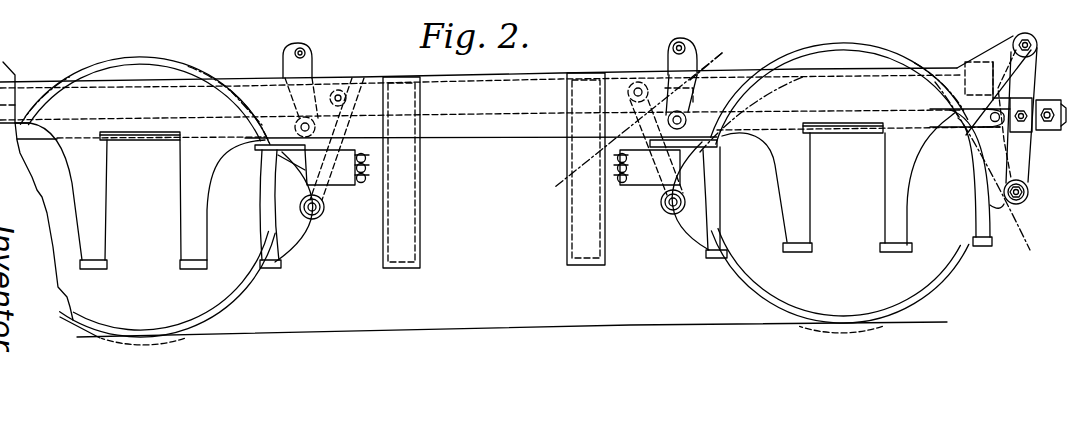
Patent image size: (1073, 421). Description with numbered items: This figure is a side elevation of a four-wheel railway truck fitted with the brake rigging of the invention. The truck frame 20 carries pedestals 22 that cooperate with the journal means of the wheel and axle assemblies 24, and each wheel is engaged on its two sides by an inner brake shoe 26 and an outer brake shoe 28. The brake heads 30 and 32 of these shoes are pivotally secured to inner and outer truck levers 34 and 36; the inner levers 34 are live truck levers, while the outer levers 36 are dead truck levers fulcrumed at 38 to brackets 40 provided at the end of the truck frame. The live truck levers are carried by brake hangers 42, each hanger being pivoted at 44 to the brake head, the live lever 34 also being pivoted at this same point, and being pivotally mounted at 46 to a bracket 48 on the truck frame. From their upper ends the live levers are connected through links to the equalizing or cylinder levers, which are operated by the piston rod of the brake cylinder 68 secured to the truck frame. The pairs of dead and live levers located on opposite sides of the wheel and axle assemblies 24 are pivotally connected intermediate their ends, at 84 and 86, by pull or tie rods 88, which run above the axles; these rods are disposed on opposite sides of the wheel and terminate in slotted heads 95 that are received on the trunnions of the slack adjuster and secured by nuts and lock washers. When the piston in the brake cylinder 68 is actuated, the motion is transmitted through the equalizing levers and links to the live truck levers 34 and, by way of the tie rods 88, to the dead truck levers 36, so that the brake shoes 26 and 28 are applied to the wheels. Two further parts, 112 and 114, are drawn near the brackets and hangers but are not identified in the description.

The truck frame 20 is at (477, 78).
The pedestals 22 is at (105, 217).
The wheel and axle assemblies 24 is at (223, 290).
The inner brake shoe 26 is at (270, 245).
The outer brake shoe 28 is at (985, 221).
The brake head 30 is at (296, 239).
The brake head 32 is at (1020, 213).
The inner truck lever 34 is at (283, 70).
The outer truck lever 36 is at (1030, 87).
The fulcrum 38 is at (1027, 33).
The bracket 40 is at (337, 90).
The brake hanger 42 is at (342, 126).
The pivot 44 is at (321, 217).
The pivot 46 is at (637, 82).
The bracket 48 is at (356, 82).
The brake cylinder 68 is at (480, 6).
The pivot connection 84 is at (1023, 128).
The pivot connection 86 is at (724, 56).
The pull or tie rod 88 is at (143, 141).
The slotted head 95 is at (1002, 130).
The arm 112 is at (1000, 122).
The spring seat plate 114 is at (348, 180).